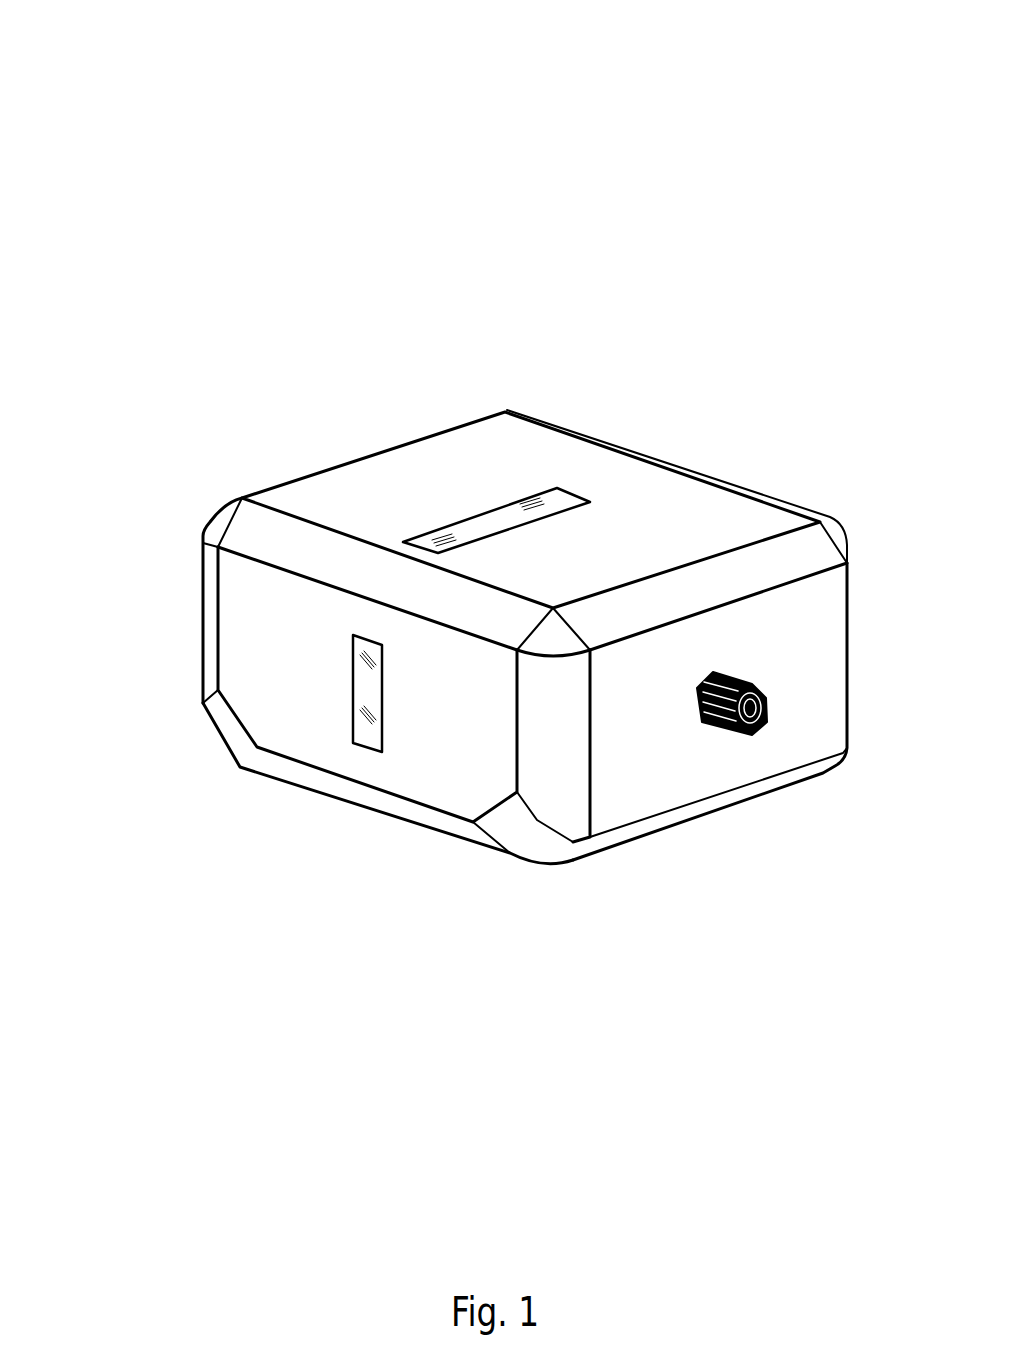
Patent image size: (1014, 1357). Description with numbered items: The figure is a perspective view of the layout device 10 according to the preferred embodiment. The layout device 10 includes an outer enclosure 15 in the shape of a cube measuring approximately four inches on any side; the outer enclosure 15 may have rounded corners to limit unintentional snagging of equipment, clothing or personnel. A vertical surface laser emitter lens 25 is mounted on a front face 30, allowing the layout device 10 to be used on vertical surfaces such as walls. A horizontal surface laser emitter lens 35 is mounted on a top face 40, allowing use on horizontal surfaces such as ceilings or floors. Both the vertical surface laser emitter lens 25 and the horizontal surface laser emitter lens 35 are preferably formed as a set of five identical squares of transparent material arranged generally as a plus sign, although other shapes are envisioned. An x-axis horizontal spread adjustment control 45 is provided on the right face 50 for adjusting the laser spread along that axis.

The layout device 10 is at (125, 183).
The outer enclosure 15 is at (193, 497).
The vertical surface laser emitter lens 25 is at (363, 737).
The front face 30 is at (492, 757).
The horizontal surface laser emitter lens 35 is at (467, 535).
The top face 40 is at (645, 510).
The x-axis horizontal spread adjustment control 45 is at (750, 733).
The right face 50 is at (835, 655).